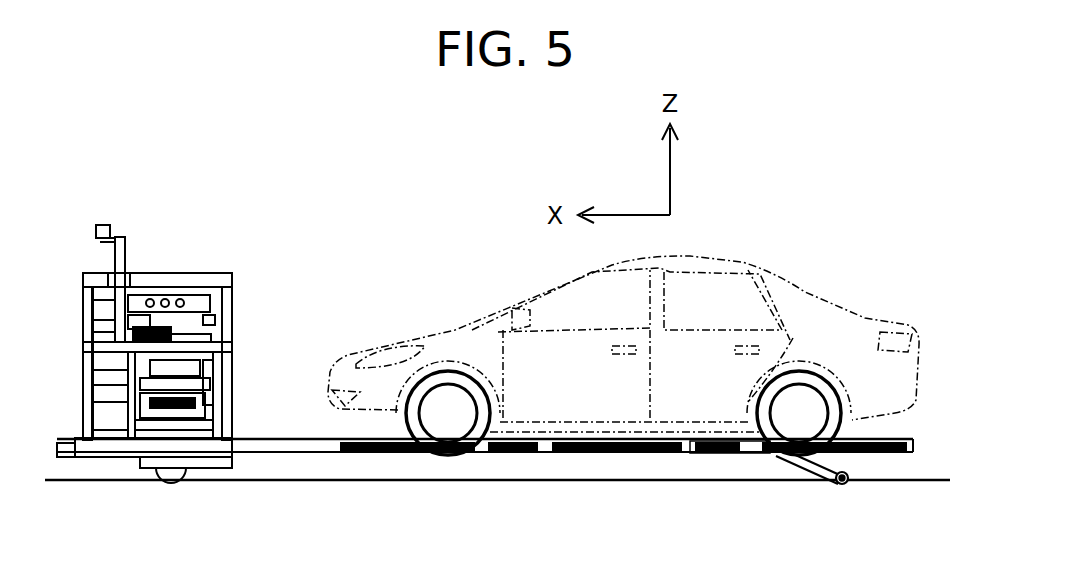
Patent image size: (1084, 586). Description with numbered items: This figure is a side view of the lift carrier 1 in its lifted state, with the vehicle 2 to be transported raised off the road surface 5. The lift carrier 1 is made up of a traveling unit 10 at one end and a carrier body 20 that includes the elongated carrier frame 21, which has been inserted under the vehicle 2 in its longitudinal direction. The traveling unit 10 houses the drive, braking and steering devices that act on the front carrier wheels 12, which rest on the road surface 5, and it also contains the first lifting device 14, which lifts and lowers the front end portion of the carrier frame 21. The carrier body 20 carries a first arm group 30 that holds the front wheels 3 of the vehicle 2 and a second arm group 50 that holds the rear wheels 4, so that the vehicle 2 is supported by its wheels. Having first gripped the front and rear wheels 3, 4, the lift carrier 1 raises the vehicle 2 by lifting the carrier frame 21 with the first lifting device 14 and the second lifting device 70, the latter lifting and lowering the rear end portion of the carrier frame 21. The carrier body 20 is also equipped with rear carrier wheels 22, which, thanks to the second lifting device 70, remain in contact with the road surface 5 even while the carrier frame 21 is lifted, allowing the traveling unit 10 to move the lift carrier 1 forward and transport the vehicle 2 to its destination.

The lift carrier 1 is at (529, 566).
The vehicle 2 is at (788, 280).
The front wheels 3 is at (446, 372).
The rear wheels 4 is at (828, 374).
The road surface 5 is at (926, 480).
The traveling unit 10 is at (92, 277).
The front carrier wheels 12 is at (152, 470).
The first lifting device 14 is at (207, 418).
The carrier body 20 is at (290, 338).
The carrier frame 21 is at (300, 438).
The rear carrier wheels 22 is at (848, 479).
The first arm group 30 is at (422, 462).
The second arm group 50 is at (758, 464).
The second lifting device 70 is at (796, 464).